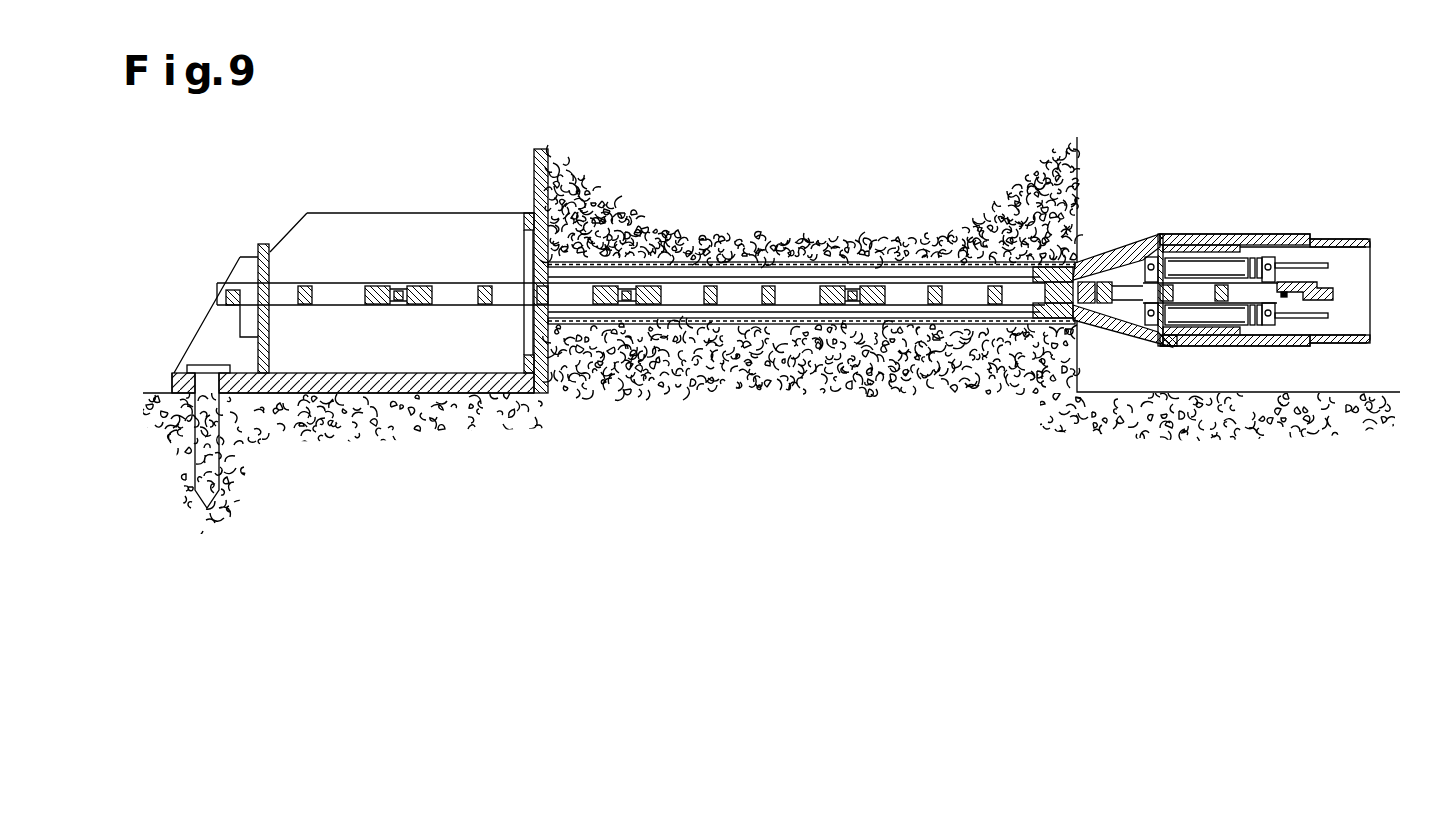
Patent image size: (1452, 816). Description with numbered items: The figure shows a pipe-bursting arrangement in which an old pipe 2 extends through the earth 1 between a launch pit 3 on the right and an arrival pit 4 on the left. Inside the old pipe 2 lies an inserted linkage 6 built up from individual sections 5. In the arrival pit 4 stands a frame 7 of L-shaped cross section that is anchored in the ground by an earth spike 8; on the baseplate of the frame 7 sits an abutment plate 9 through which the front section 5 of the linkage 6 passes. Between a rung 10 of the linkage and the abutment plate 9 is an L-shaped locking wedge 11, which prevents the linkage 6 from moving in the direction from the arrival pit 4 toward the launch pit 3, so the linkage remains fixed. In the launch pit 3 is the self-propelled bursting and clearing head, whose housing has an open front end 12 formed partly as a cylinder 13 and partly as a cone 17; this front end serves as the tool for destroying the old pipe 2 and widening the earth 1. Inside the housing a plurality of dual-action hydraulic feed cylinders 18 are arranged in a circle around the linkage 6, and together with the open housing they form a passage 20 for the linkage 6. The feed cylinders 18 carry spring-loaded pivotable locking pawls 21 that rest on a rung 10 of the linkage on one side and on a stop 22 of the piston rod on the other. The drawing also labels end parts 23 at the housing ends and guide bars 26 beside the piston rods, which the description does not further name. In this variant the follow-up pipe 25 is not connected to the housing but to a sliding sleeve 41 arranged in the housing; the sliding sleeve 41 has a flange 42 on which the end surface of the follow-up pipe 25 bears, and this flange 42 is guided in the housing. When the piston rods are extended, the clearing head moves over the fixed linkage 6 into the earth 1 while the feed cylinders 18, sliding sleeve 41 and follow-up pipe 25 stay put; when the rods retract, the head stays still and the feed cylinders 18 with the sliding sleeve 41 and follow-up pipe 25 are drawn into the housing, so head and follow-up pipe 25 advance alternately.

The earth 1 is at (708, 345).
The old pipe 2 is at (748, 262).
The launch pit 3 is at (1138, 183).
The arrival pit 4 is at (510, 182).
The section 5 is at (905, 304).
The linkage 6 is at (460, 310).
The frame 7 is at (340, 373).
The earth spike 8 is at (207, 466).
The abutment plate 9 is at (265, 245).
The rung 10 is at (222, 297).
The locking wedge 11 is at (245, 272).
The front end 12 is at (1042, 314).
The cylinder 13 is at (1040, 262).
The cone 17 is at (1098, 265).
The dual-action hydraulic feed cylinder 18 is at (1208, 313).
The passage 20 is at (1327, 283).
The locking pawl 21 is at (1278, 238).
The stop 22 is at (1287, 295).
The end cap 23 is at (1140, 238).
The follow-up pipe 25 is at (1337, 239).
The guide bar 26 is at (1316, 239).
The sliding sleeve 41 is at (1213, 239).
The flange 42 is at (1172, 346).